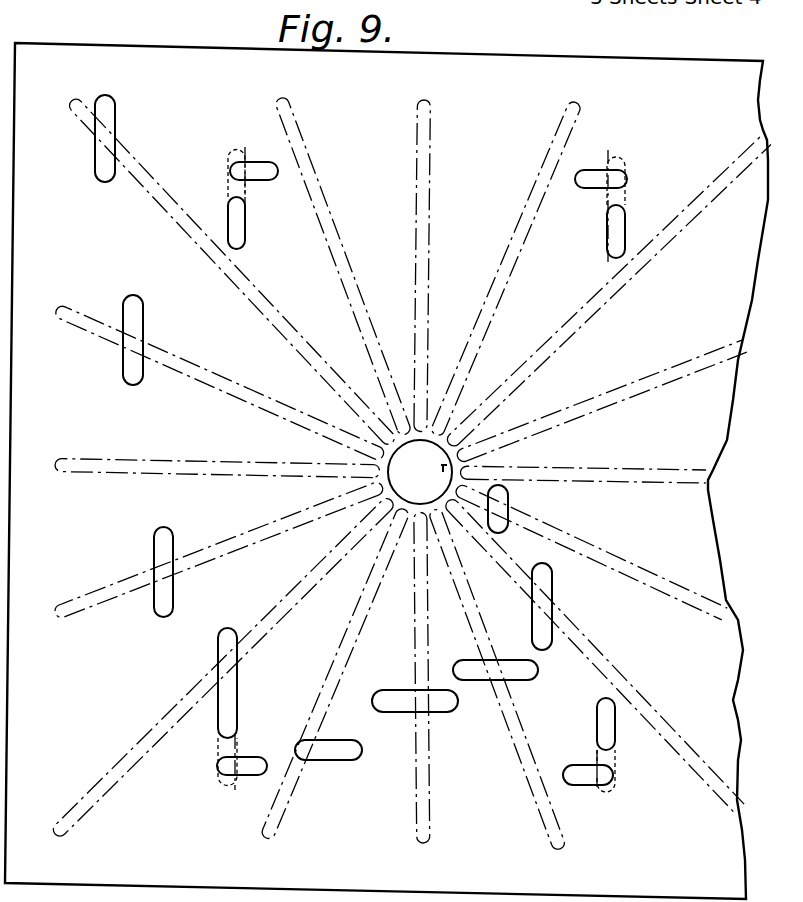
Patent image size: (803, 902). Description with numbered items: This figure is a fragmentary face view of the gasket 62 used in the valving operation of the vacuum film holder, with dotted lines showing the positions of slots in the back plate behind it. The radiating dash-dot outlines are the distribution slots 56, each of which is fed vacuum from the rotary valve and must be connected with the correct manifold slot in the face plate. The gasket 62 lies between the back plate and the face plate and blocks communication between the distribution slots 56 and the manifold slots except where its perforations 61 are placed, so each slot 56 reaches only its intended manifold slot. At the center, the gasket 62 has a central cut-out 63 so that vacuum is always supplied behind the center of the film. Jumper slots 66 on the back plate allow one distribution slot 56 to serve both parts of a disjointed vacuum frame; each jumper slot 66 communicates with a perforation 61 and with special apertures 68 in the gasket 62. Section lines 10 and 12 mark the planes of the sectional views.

The section line 10- 10 is at (228, 568).
The section line 12- 12 is at (292, 714).
The distribution slots 56 is at (199, 363).
The perforations 61 is at (152, 612).
The gasket 62 is at (62, 868).
The central cut-out 63 is at (490, 462).
The jumper slots 66 is at (218, 745).
The special apertures 68 is at (277, 182).